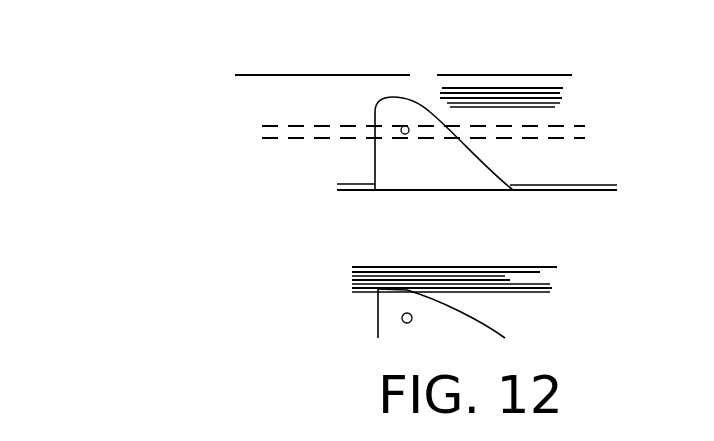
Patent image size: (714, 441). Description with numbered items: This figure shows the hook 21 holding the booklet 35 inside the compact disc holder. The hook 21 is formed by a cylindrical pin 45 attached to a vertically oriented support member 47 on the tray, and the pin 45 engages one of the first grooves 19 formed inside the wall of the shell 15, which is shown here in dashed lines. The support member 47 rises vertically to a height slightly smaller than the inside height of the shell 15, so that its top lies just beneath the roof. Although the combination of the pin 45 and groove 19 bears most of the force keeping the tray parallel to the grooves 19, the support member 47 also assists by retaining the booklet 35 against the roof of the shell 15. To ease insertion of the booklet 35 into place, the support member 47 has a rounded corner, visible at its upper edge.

The shell 15 is at (548, 73).
The groove 19 is at (577, 137).
The hook 21 is at (352, 159).
The booklet 35 is at (462, 93).
The cylindrical pin 45 is at (404, 125).
The support member 47 is at (410, 182).